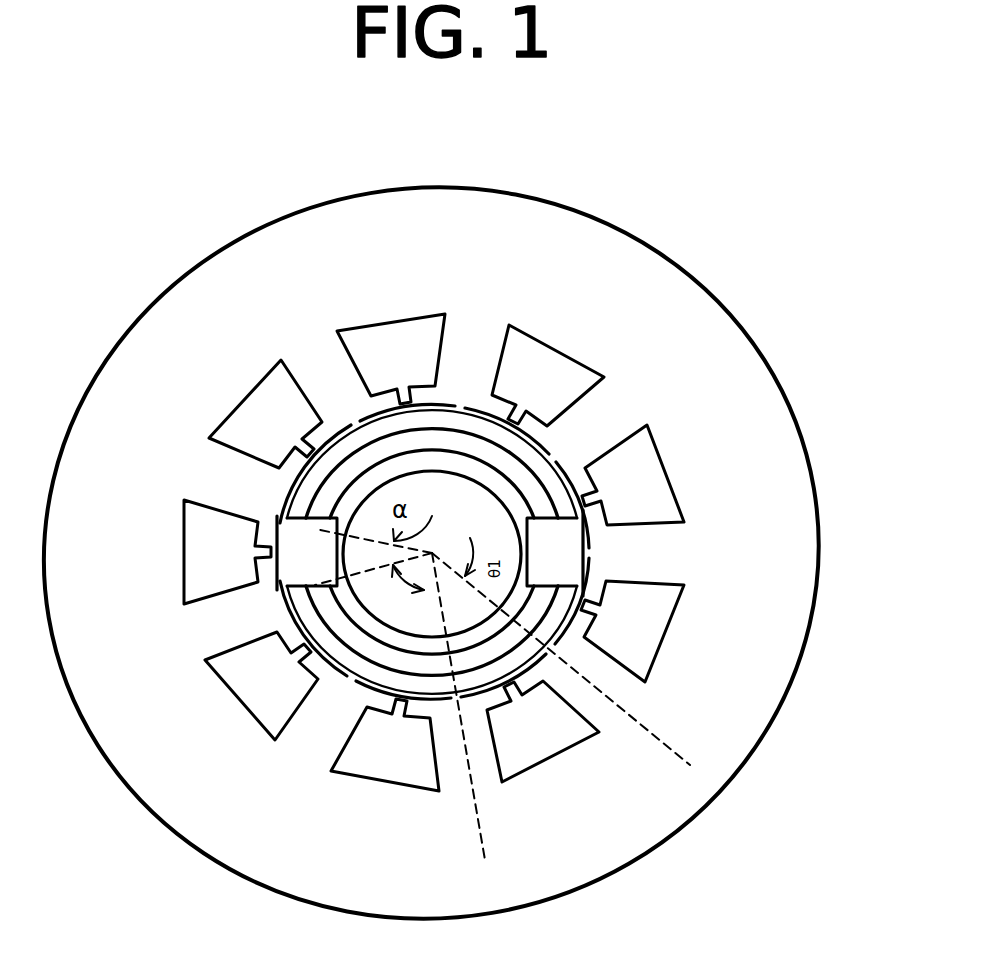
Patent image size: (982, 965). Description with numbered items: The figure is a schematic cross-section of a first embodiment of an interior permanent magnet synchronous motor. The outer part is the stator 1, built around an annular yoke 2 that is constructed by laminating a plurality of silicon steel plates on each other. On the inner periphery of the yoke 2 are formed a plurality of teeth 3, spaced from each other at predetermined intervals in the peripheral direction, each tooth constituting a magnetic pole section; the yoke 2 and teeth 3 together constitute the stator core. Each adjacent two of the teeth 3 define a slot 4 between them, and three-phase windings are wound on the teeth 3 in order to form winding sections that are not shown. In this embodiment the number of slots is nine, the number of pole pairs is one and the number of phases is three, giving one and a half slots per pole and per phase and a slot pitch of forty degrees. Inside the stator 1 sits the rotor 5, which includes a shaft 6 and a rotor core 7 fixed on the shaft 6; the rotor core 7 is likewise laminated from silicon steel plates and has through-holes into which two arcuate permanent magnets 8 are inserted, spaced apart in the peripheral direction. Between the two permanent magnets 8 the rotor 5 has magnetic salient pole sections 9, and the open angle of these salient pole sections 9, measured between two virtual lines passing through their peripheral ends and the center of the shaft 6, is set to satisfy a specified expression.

The stator 1 is at (705, 748).
The annular yoke 2 is at (760, 516).
The teeth 3 is at (653, 555).
The slot 4 is at (637, 627).
The rotor 5 is at (313, 443).
The shaft 6 is at (543, 475).
The rotor core 7 is at (487, 512).
The permanent magnets 8 is at (510, 467).
The magnetic salient pole sections 9 is at (568, 548).